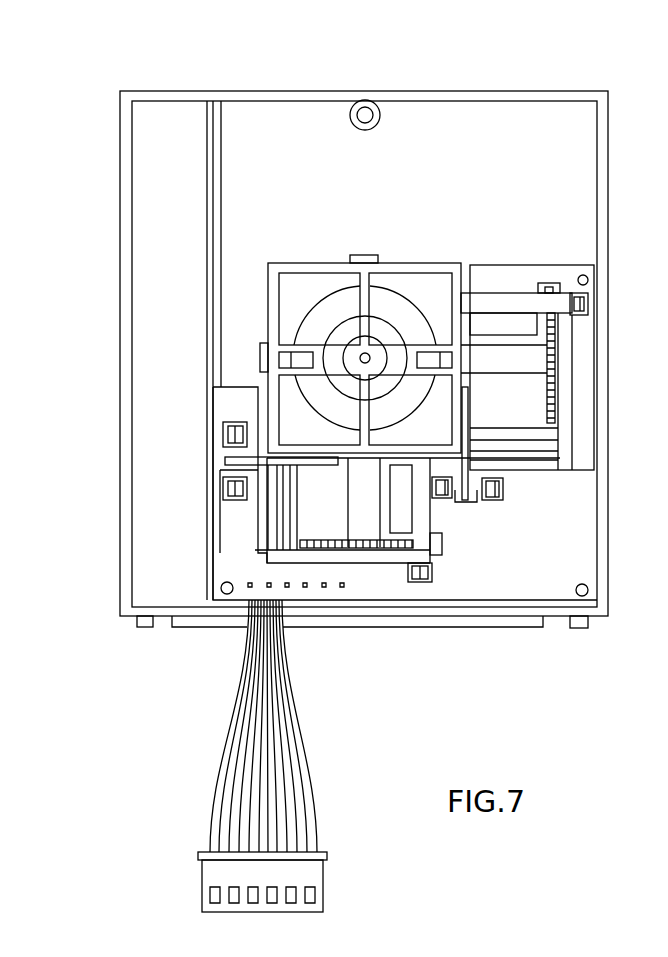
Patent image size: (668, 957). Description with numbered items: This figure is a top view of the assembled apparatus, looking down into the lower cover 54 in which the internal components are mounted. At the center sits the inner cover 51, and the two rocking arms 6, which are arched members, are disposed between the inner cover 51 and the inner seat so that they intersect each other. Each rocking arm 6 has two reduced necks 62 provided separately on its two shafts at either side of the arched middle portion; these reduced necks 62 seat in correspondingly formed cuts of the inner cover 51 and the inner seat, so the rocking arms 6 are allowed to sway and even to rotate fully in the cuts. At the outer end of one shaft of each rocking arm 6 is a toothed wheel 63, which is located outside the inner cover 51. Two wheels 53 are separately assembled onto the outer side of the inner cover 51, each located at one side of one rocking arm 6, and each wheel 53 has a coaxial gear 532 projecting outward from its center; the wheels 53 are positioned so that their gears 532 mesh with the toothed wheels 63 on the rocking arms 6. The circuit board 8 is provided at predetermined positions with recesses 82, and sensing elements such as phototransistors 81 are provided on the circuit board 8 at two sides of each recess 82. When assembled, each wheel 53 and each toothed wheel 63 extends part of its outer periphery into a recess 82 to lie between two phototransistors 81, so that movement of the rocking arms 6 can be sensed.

The lower cover 54 is at (122, 178).
The circuit board 8 is at (222, 533).
The inner cover 51 is at (420, 268).
The reduced necks 62 is at (263, 345).
The rocking arms 6 is at (463, 358).
The toothed wheel 63 is at (552, 357).
The gear 532 is at (527, 440).
The wheels 53 is at (228, 462).
The phototransistors 81 is at (588, 303).
The recesses 82 is at (560, 285).